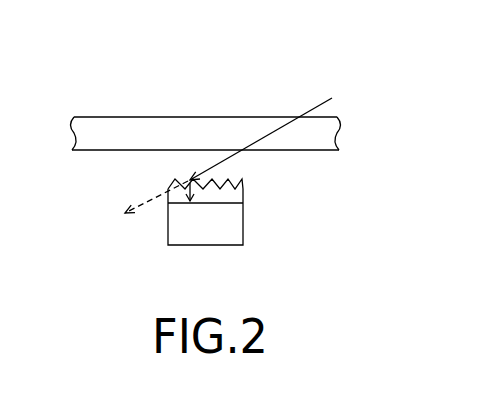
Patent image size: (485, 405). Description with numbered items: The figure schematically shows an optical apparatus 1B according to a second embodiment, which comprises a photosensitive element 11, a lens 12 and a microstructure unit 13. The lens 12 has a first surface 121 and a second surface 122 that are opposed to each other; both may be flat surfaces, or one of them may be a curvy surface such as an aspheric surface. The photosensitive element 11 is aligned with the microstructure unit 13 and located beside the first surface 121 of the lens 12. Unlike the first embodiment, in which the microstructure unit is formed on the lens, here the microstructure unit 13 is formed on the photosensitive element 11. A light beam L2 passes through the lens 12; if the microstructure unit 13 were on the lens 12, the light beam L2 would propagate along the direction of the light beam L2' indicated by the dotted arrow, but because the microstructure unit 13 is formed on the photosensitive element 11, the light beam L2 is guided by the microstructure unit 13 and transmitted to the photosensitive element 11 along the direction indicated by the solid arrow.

The optical apparatus 1B is at (324, 24).
The photosensitive element 11 is at (228, 226).
The lens 12 is at (112, 131).
The first surface 121 is at (327, 152).
The second surface 122 is at (263, 116).
The microstructure unit 13 is at (246, 189).
The light beam L2 is at (250, 128).
The light beam L2' is at (126, 184).